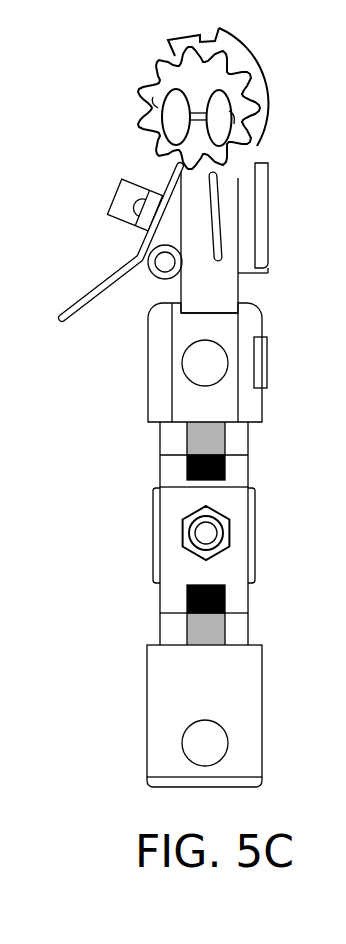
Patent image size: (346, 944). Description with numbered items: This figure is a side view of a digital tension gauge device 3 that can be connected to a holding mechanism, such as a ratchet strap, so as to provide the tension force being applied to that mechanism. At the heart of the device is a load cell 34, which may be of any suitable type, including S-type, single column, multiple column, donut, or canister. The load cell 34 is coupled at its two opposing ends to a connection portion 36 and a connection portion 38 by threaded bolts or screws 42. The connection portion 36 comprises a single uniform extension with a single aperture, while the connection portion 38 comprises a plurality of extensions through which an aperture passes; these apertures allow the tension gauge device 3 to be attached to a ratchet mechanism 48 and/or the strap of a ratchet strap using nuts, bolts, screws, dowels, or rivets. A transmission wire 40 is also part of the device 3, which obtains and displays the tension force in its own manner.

The tension gauge device 3 is at (135, 383).
The load cell 34 is at (243, 532).
The connection portion 36 is at (243, 367).
The connection portion 38 is at (245, 677).
The transmission wire 40 is at (193, 530).
The threaded bolts or screws 42 is at (217, 440).
The ratchet mechanism 48 is at (218, 118).